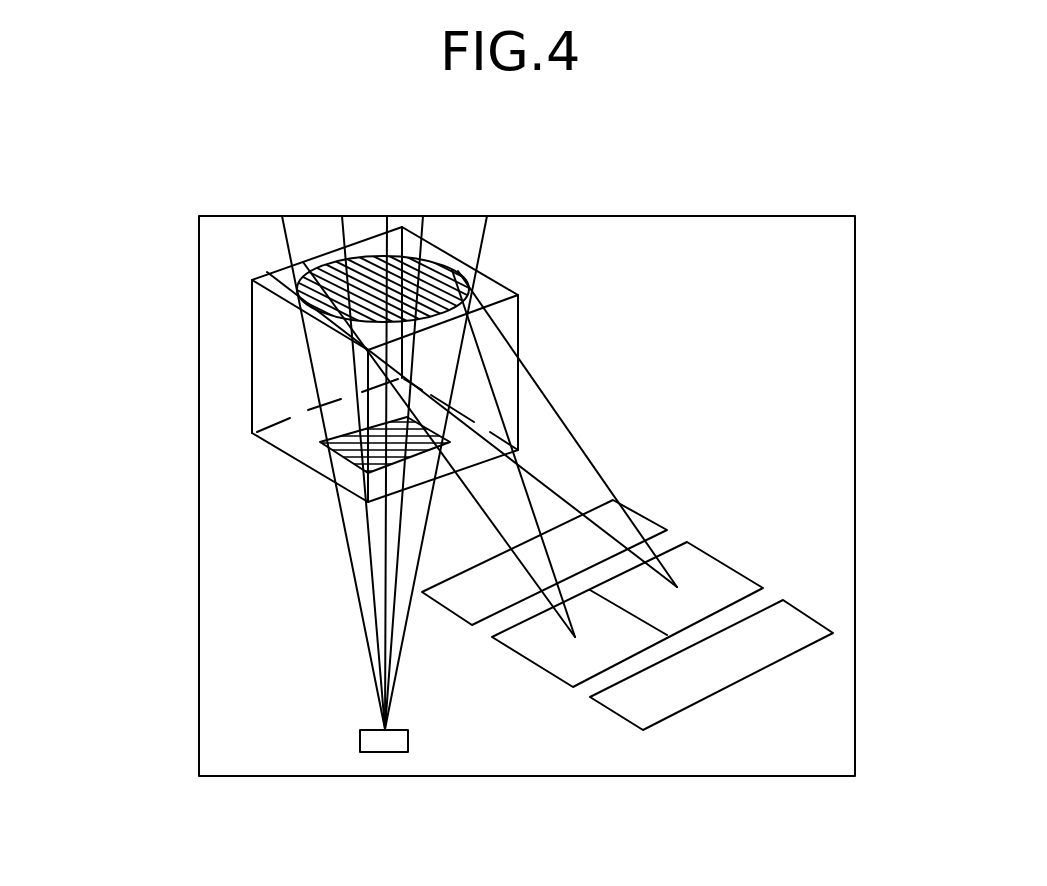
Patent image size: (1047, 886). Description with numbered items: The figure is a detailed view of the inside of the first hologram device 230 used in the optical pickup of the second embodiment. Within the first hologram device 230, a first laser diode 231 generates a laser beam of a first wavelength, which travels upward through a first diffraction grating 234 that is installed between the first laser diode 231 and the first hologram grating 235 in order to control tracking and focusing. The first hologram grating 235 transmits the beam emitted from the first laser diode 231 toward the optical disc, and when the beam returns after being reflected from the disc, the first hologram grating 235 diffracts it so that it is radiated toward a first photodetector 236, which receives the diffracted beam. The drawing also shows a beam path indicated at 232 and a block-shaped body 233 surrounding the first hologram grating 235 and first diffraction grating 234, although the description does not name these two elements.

The first hologram device 230 is at (858, 440).
The first laser diode 231 is at (360, 743).
The light beam 232 is at (560, 283).
The optical block 233 is at (283, 355).
The first diffraction grating 234 is at (340, 437).
The first hologram grating 235 is at (316, 258).
The first photodetector 236 is at (650, 494).